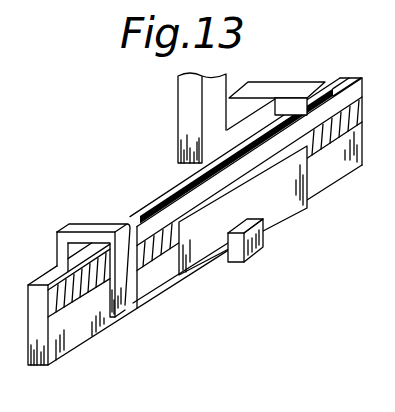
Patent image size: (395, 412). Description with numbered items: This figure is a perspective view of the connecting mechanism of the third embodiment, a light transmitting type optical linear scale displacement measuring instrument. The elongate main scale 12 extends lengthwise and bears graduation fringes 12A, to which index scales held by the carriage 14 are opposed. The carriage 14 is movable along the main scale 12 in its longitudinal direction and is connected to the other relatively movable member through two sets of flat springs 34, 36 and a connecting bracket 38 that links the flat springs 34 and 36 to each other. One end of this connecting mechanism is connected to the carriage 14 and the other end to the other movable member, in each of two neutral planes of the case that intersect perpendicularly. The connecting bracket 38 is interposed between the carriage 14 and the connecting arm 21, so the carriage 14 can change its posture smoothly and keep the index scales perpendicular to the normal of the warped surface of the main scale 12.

The main scale 12 is at (79, 348).
The graduation fringes 12A is at (87, 291).
The carriage 14 is at (292, 222).
The connecting arm 21 is at (186, 119).
The flat spring 34 is at (305, 124).
The flat spring 36 is at (168, 288).
The connecting bracket 38 is at (88, 225).